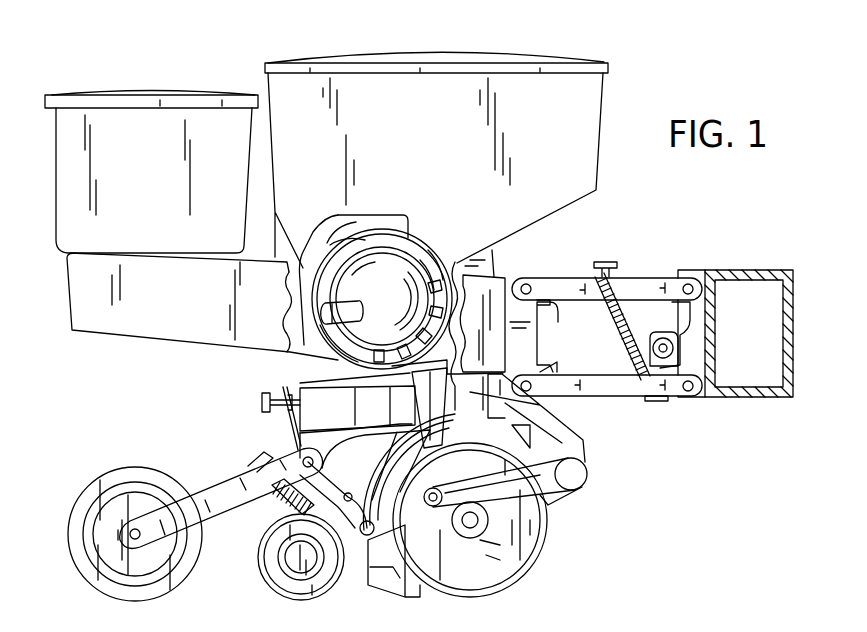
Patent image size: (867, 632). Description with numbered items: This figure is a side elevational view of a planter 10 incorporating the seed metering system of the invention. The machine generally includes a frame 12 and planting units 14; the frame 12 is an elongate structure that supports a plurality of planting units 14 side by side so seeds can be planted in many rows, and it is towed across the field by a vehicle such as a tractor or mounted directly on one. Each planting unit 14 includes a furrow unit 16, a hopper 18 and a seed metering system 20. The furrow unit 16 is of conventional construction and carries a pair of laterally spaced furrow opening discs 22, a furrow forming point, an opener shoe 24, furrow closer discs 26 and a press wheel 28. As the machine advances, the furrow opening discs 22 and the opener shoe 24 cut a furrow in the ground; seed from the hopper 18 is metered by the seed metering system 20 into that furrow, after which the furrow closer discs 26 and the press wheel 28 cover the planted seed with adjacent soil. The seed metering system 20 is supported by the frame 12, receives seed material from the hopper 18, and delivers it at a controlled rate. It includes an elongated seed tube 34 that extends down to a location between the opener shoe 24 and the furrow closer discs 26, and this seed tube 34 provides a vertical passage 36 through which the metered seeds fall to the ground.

The row crop planter unit 10 is at (139, 64).
The frame 12 is at (753, 268).
The planting unit 14 is at (442, 142).
The furrow unit 16 is at (556, 548).
The hopper 18 is at (293, 62).
The seed metering system 20 is at (336, 365).
The furrow opening disc 22 is at (513, 577).
The opener shoe 24 is at (418, 592).
The furrow closer disc 26 is at (305, 600).
The press wheel 28 is at (118, 594).
The seed tube 34 is at (300, 383).
The vertical passage 36 is at (300, 433).